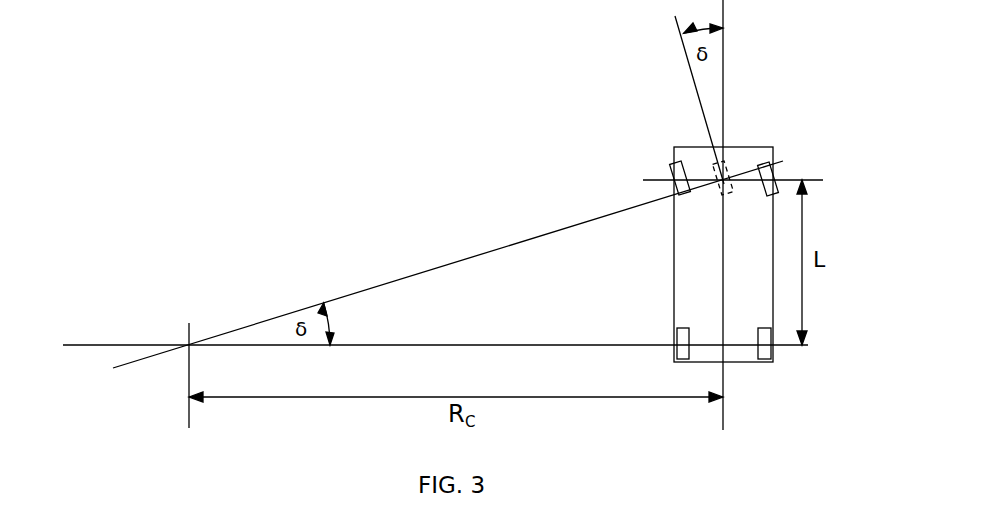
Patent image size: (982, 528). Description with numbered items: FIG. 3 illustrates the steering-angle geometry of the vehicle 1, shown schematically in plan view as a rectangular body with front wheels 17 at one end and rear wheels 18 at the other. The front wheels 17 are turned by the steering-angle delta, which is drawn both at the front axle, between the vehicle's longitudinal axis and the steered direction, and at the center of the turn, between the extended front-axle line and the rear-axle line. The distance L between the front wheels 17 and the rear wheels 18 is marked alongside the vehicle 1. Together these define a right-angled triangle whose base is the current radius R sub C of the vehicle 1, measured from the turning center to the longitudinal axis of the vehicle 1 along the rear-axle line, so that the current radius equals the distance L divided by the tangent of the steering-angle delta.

The vehicle 1 is at (745, 147).
The front wheels 17 is at (673, 178).
The rear wheels 18 is at (681, 361).